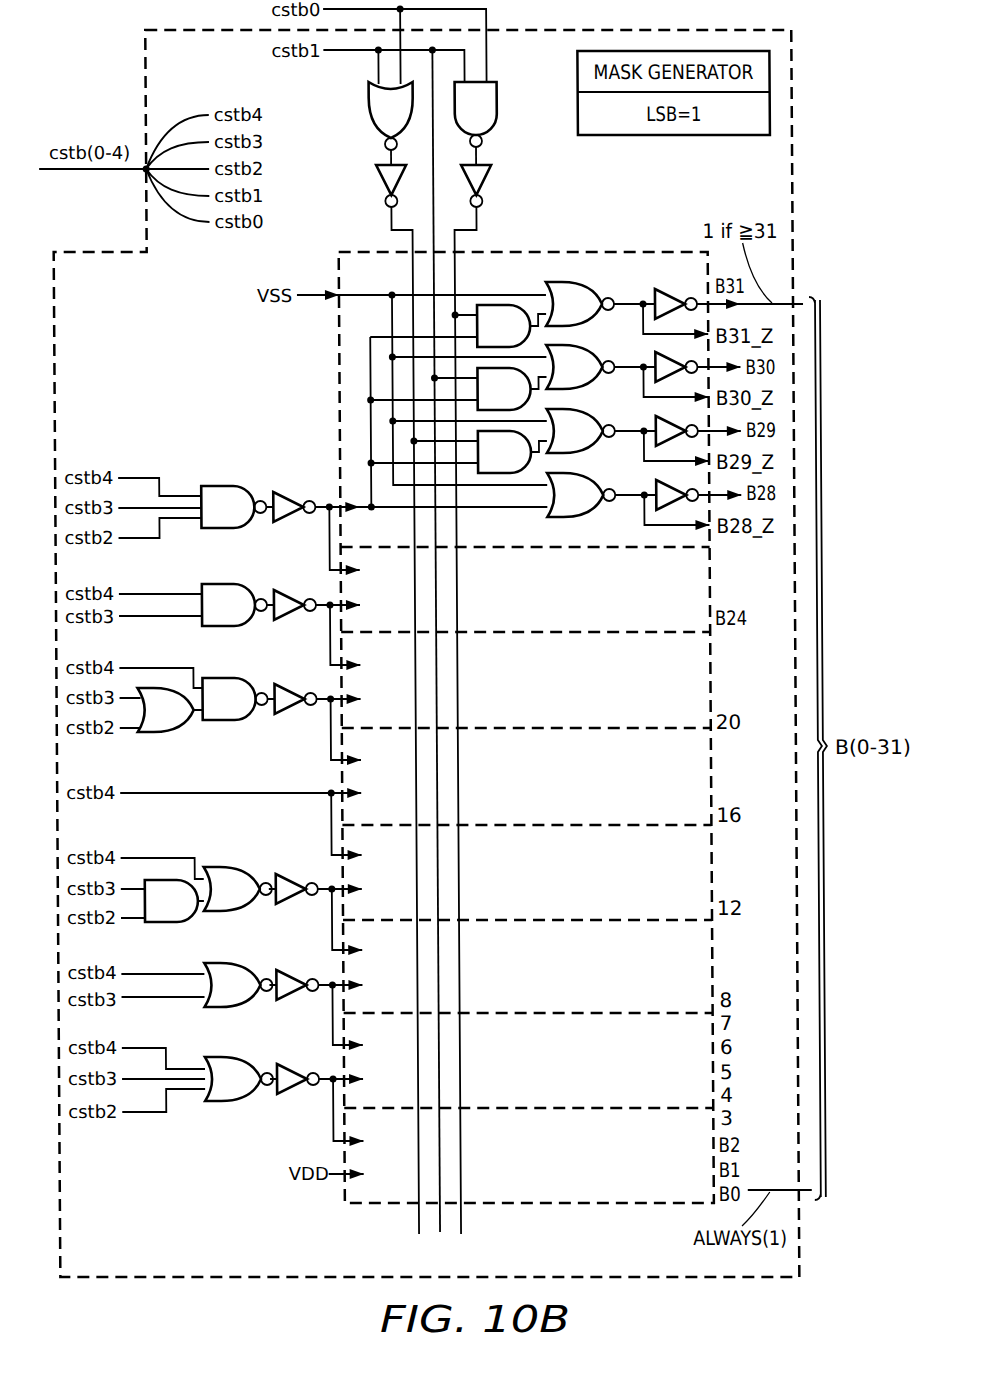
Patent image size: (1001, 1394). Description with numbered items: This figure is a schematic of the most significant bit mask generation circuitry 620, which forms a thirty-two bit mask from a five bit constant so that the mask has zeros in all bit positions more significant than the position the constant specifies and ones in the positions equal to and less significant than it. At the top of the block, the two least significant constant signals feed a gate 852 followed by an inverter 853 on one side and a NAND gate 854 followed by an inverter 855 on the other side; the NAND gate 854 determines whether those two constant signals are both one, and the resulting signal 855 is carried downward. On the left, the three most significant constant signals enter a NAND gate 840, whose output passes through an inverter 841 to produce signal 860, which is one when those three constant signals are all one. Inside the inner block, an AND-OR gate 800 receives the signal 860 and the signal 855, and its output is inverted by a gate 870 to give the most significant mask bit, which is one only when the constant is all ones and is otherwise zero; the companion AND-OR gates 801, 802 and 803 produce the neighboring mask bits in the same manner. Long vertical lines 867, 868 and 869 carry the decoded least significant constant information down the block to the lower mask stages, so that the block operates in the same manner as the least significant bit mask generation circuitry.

The msb mask generation circuitry 620 is at (795, 156).
The NOR gate 852 is at (370, 102).
The inverter 853 is at (378, 183).
The NAND gate 854 is at (499, 100).
The signal 855 is at (490, 183).
The signal 860 is at (368, 370).
The NAND gate 840 is at (217, 486).
The inverter 841 is at (290, 492).
The gate 870 is at (655, 292).
The AND-OR gate 800 is at (613, 326).
The NOR gate 801 is at (613, 389).
The NOR gate 802 is at (613, 452).
The NOR gate 803 is at (613, 516).
The signal line 867 is at (413, 1218).
The signal line 868 is at (434, 1236).
The signal line 869 is at (455, 1218).